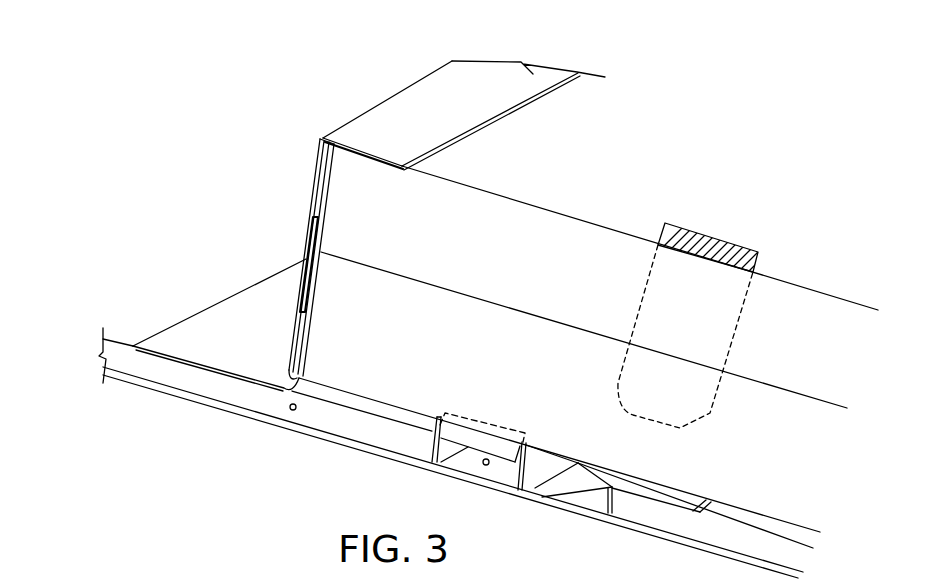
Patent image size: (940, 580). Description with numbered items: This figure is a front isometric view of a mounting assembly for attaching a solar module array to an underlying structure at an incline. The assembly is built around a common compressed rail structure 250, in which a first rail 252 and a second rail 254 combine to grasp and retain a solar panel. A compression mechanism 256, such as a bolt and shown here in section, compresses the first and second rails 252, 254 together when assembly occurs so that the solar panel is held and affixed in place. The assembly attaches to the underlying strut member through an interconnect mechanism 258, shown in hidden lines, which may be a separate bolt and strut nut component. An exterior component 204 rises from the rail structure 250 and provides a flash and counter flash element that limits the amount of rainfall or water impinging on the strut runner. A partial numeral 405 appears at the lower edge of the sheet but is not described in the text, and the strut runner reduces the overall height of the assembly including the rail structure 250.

The exterior component 204 is at (296, 232).
The common compressed rail structure 250 is at (881, 456).
The first rail 252 is at (817, 355).
The second rail 254 is at (777, 468).
The compression mechanism 256 is at (745, 243).
The interconnect mechanism 258 is at (482, 430).
The reference 405 is at (918, 574).